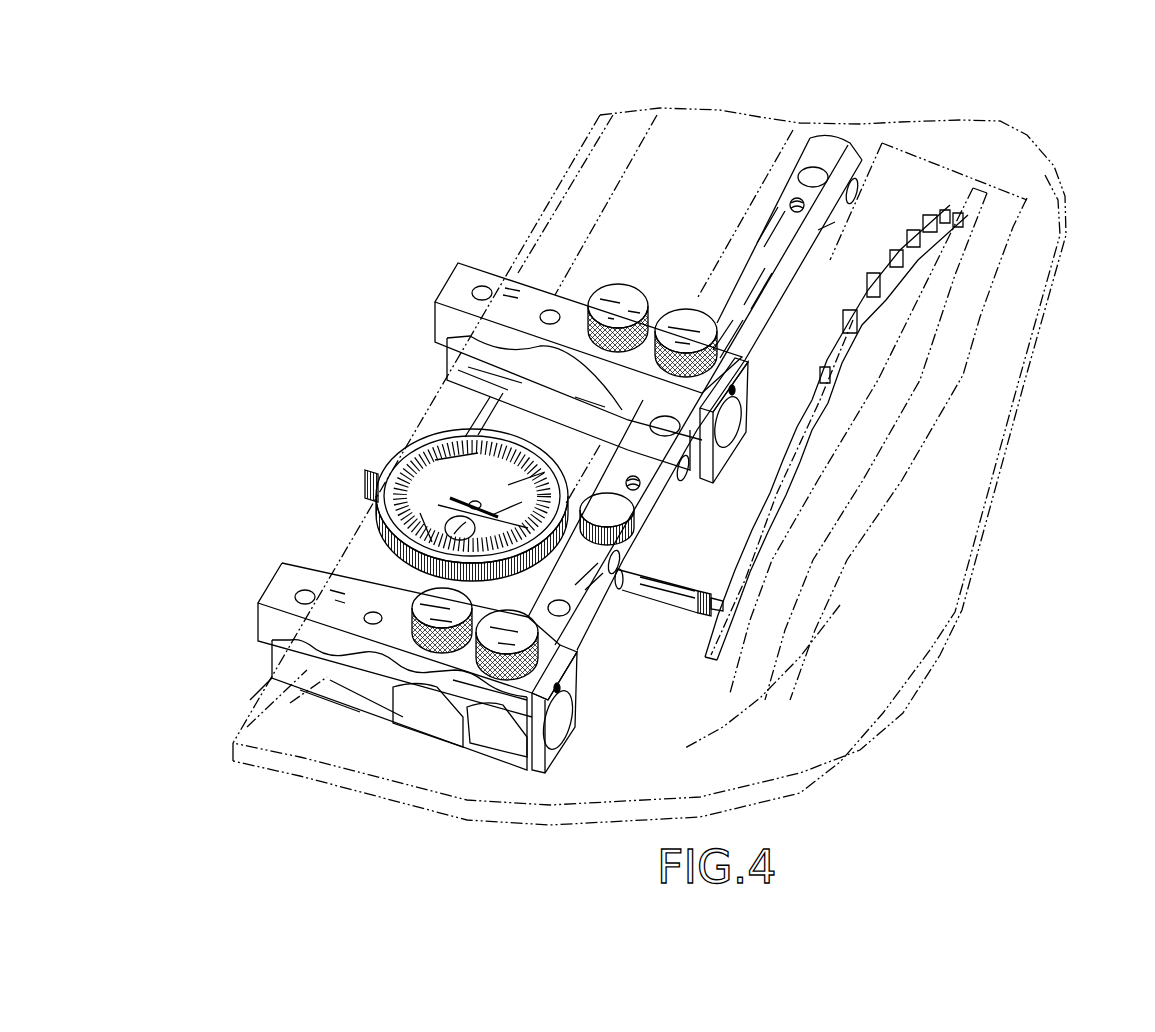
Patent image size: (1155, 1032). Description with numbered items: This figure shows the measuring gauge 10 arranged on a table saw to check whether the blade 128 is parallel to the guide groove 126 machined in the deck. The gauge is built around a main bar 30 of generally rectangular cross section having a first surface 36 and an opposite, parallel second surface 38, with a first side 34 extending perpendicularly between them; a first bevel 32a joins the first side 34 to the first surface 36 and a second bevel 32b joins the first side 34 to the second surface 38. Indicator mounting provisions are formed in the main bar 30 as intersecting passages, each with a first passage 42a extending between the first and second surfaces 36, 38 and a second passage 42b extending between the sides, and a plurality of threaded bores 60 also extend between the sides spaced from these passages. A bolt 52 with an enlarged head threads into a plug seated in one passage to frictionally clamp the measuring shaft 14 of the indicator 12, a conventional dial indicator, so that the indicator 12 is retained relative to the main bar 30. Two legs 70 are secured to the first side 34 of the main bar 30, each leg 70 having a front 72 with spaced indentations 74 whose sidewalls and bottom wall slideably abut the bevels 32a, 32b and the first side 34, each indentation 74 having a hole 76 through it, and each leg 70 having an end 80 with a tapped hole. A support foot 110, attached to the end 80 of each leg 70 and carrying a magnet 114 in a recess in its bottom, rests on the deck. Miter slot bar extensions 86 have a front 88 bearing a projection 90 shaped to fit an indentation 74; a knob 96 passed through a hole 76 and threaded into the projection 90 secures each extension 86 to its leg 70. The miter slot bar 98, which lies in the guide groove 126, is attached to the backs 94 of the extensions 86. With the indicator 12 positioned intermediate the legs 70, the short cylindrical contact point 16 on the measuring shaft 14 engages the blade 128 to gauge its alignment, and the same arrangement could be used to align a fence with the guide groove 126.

The measuring gauge 10 is at (272, 416).
The indicator 12 is at (393, 457).
The measuring shaft 14 is at (663, 595).
The short cylindrical contact point 16 is at (723, 604).
The main bar 30 is at (667, 523).
The first bevel 32a is at (795, 182).
The second bevel 32b is at (683, 445).
The first side 34 is at (775, 225).
The first surface 36 is at (483, 743).
The second surface 38 is at (835, 220).
The first passage 42a is at (855, 185).
The second passage 42b is at (815, 172).
The bolt 52 is at (618, 522).
The threaded bore 60 is at (627, 483).
The leg 70 is at (272, 583).
The front 72 is at (387, 700).
The indentation 74 is at (597, 360).
The hole 76 is at (366, 618).
The end 80 is at (748, 358).
The miter slot bar extension 86 is at (488, 348).
The front 88 is at (297, 653).
The projection 90 is at (608, 398).
The back 94 is at (293, 690).
The knob 96 is at (683, 318).
The miter slot bar 98 is at (435, 418).
The support foot 110 is at (736, 428).
The magnet 114 is at (737, 405).
The guide groove 126 is at (587, 207).
The blade 128 is at (897, 300).